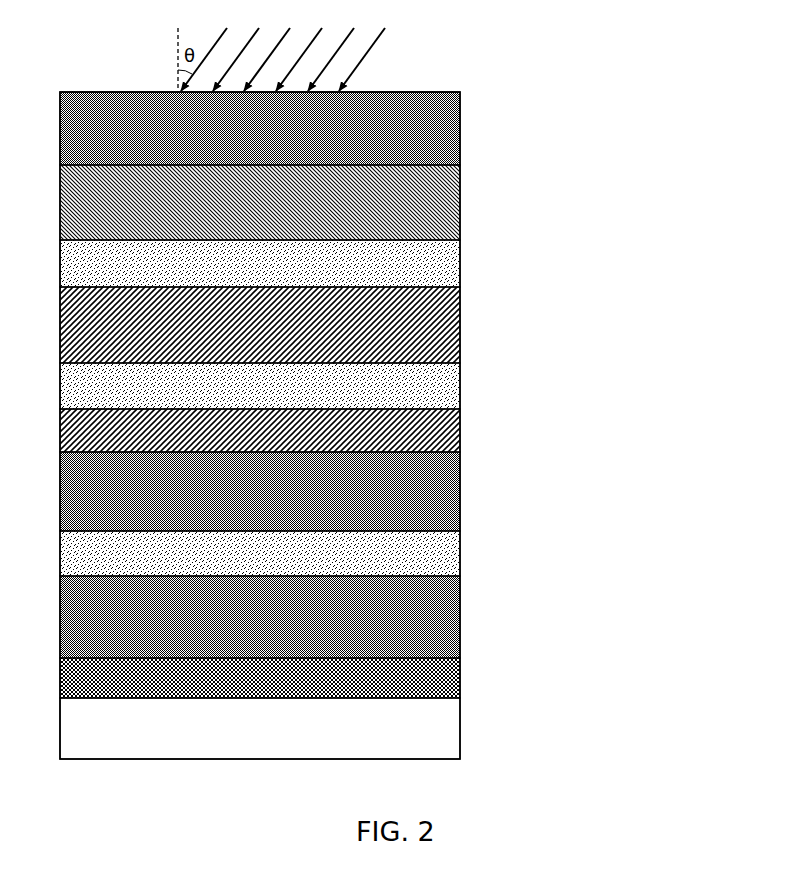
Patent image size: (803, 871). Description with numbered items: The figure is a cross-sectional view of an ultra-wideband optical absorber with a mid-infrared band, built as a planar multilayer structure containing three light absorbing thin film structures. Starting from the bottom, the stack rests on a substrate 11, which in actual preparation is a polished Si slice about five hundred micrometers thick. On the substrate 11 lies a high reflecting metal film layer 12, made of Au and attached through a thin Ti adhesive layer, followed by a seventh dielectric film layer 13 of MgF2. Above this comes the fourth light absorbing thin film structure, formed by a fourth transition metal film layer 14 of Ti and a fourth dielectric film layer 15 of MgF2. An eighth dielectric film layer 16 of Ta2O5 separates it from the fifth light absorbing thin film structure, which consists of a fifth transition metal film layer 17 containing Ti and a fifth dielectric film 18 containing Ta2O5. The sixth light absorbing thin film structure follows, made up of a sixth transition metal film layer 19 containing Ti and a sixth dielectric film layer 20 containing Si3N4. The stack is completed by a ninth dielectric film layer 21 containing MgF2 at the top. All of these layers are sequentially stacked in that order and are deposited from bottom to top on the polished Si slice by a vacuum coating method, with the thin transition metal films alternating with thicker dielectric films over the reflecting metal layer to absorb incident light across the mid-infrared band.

The substrate 11 is at (425, 737).
The high reflecting metal film layer 12 is at (425, 679).
The seventh dielectric film layer 13 is at (425, 617).
The fourth transition metal film layer 14 is at (425, 555).
The fourth dielectric film layer 15 is at (425, 495).
The eighth dielectric film layer 16 is at (425, 432).
The fifth transition metal film layer 17 is at (425, 388).
The fifth dielectric film 18 is at (425, 328).
The sixth transition metal film layer 19 is at (425, 271).
The sixth dielectric film layer 20 is at (425, 208).
The ninth dielectric film layer 21 is at (425, 133).